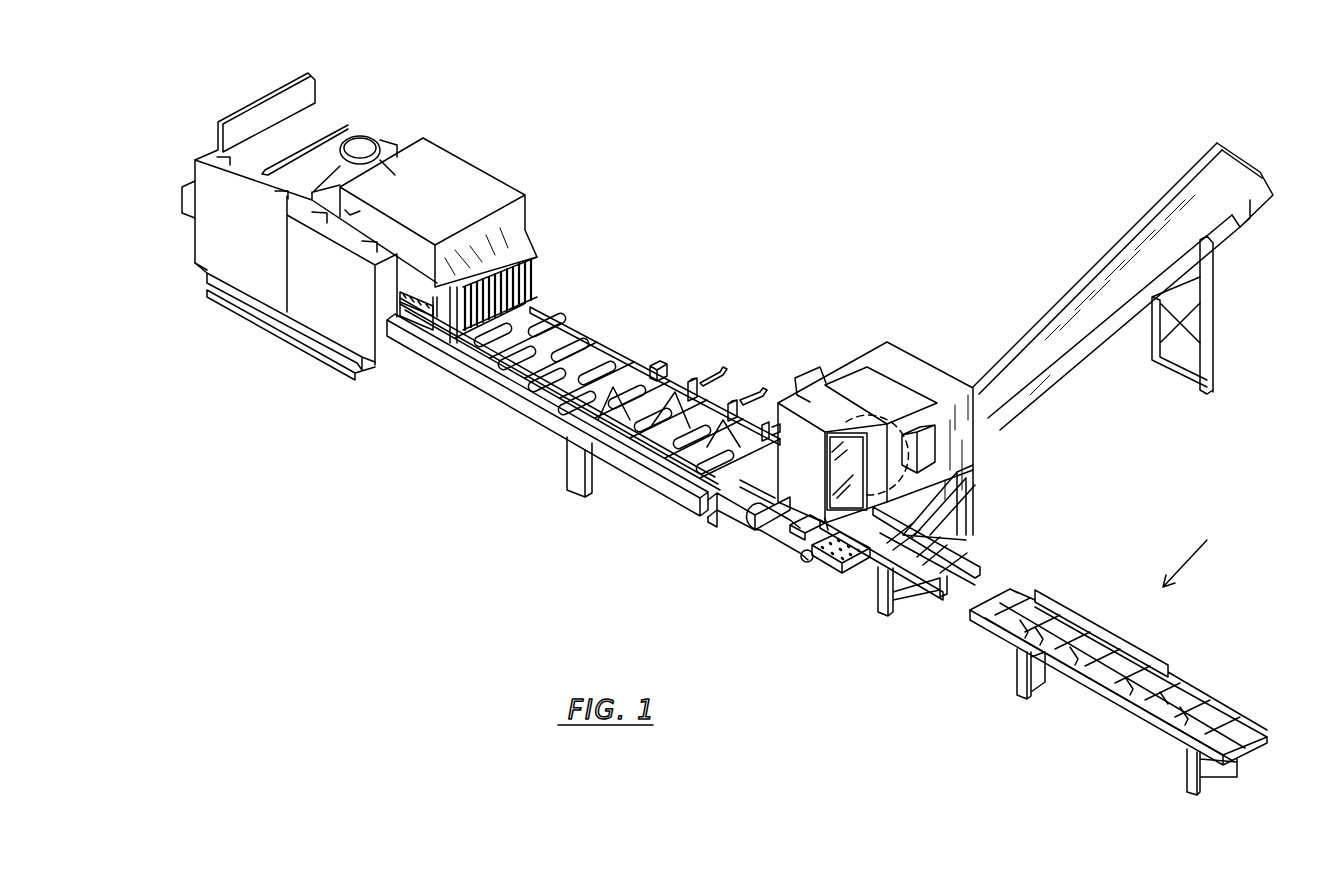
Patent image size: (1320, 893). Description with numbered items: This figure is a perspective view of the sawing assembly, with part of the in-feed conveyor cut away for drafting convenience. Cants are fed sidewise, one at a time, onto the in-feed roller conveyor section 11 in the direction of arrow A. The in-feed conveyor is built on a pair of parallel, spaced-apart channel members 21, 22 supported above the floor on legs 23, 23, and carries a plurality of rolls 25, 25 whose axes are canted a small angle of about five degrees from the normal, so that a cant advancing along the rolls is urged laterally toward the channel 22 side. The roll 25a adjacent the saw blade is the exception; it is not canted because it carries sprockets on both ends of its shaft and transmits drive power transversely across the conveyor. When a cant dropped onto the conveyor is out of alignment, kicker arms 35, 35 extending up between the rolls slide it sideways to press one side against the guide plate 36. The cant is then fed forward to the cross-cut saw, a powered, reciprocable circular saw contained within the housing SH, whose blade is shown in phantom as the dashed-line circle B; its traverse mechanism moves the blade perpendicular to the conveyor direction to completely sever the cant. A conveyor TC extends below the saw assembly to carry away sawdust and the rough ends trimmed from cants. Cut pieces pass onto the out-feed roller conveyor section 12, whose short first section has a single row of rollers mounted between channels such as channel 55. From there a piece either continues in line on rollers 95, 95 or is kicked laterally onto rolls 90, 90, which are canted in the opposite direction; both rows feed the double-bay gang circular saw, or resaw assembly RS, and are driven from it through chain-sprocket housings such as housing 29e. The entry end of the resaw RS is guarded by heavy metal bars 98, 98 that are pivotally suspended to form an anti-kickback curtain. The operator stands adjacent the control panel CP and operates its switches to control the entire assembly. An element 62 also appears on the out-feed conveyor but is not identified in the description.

The resaw assembly RS is at (442, 215).
The heavy metal bars 98 is at (530, 258).
The rollers 95 is at (557, 343).
The clamping devices 62 is at (648, 366).
The rolls 90 is at (505, 345).
The chain-sprocket housing 29e is at (530, 405).
The channel 55 is at (572, 465).
The out-feed roller conveyor section 12 is at (398, 410).
The saw housing SH is at (880, 350).
The beam region B is at (872, 450).
The in-feed roll adjacent the saw blade 25a is at (950, 492).
The rolls 25 is at (972, 560).
The control panel CP is at (830, 558).
The legs 23 is at (895, 603).
The kicker arms 35 is at (1025, 623).
The guide plate 36 is at (1130, 637).
The channel member 22 is at (1212, 692).
The outer channel member 21 is at (1176, 740).
The in-feed roller conveyor section 11 is at (1160, 803).
The conveyor TC is at (1108, 248).
The arrow A is at (1187, 563).